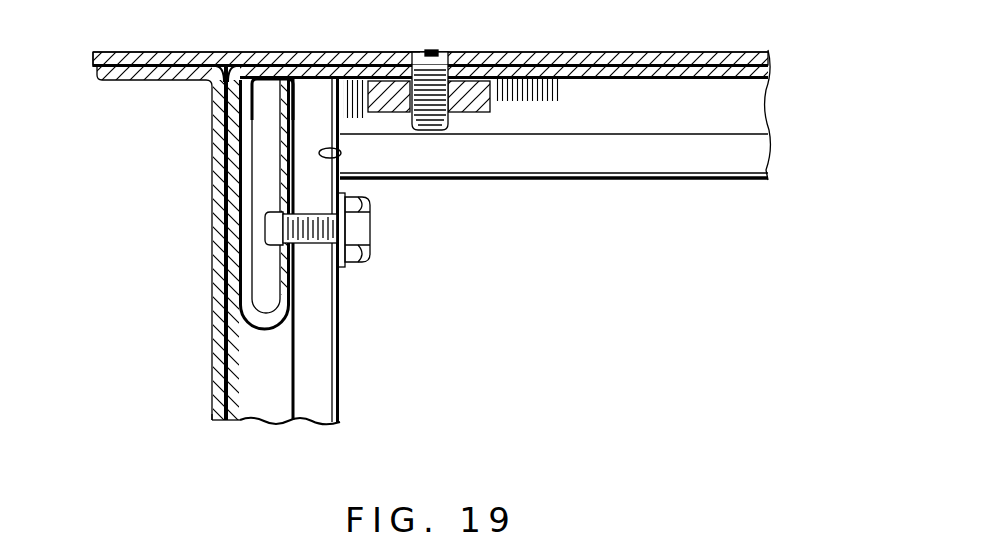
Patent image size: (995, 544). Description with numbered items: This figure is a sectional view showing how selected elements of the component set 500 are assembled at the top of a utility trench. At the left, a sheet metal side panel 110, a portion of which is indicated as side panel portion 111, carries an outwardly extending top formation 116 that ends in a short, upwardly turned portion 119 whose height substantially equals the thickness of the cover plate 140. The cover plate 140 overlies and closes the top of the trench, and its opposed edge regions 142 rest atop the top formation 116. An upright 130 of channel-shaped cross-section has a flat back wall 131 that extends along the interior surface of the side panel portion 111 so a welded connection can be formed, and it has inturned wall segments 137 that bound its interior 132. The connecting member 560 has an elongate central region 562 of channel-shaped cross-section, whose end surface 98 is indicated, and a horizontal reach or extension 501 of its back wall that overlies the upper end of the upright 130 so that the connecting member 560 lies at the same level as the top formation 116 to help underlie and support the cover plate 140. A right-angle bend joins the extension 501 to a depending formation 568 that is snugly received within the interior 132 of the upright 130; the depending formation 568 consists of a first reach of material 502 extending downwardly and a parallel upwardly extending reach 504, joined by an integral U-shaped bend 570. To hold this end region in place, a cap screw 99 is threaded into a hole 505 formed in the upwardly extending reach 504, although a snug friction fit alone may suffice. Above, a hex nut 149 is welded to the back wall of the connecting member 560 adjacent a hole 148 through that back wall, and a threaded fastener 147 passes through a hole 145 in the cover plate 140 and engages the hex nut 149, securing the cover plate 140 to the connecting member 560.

The cover plate 140 is at (706, 48).
The opposed edge regions 142 is at (158, 57).
The upwardly turned portion 119 is at (93, 66).
The top formation 116 is at (170, 81).
The horizontal reach or extension 501 is at (287, 70).
The side panel 110 is at (210, 320).
The depending formation 568 is at (228, 172).
The flat back wall 131 is at (240, 409).
The side panel portion 111 is at (218, 422).
The U-shaped bend 570 is at (278, 330).
The first reach of material 502 is at (240, 207).
The upwardly extending reach of material 504 is at (293, 275).
The upright 130 is at (345, 322).
The inturned wall segment 137 is at (332, 375).
The interior 132 is at (285, 410).
The elongate central region 562 is at (473, 168).
The connecting member 560 is at (590, 182).
The threaded fastener 147 is at (462, 55).
The hex nut 149 is at (490, 104).
The hole 148 is at (440, 52).
The hole 145 is at (406, 40).
The end surface 98 is at (338, 157).
The hole 505 is at (266, 230).
The cap screw 99 is at (366, 232).
The component set 500 is at (426, 240).